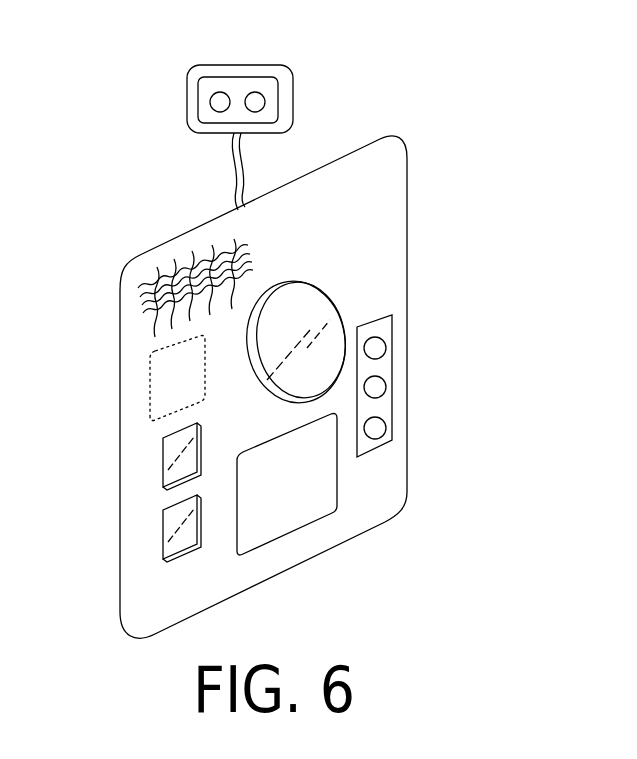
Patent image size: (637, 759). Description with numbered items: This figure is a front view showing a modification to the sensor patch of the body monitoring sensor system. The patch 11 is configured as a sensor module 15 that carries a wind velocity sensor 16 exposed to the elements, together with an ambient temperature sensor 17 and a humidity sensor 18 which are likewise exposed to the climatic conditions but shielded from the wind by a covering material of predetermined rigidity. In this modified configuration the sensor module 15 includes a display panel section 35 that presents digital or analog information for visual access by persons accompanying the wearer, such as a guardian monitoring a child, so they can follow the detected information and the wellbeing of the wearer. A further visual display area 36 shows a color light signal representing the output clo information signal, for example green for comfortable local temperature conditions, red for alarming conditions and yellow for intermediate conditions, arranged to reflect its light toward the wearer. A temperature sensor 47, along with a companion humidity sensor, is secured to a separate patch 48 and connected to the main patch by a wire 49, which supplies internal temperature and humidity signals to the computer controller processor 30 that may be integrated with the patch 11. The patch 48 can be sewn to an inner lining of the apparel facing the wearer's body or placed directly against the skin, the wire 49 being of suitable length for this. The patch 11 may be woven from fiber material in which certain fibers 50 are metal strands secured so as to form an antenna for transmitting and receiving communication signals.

The patch 11 is at (248, 573).
The sensor module 15 is at (267, 387).
The wind velocity sensor 16 is at (327, 305).
The ambient temperature sensor 17 is at (162, 464).
The humidity sensor 18 is at (162, 540).
The computer controller processor 30 is at (148, 392).
The display panel section 35 is at (317, 498).
The visual display area 36 is at (395, 370).
The temperature sensor 47 is at (216, 92).
The patch 48 is at (285, 104).
The wire 49 is at (230, 189).
The fibers 50 is at (150, 318).